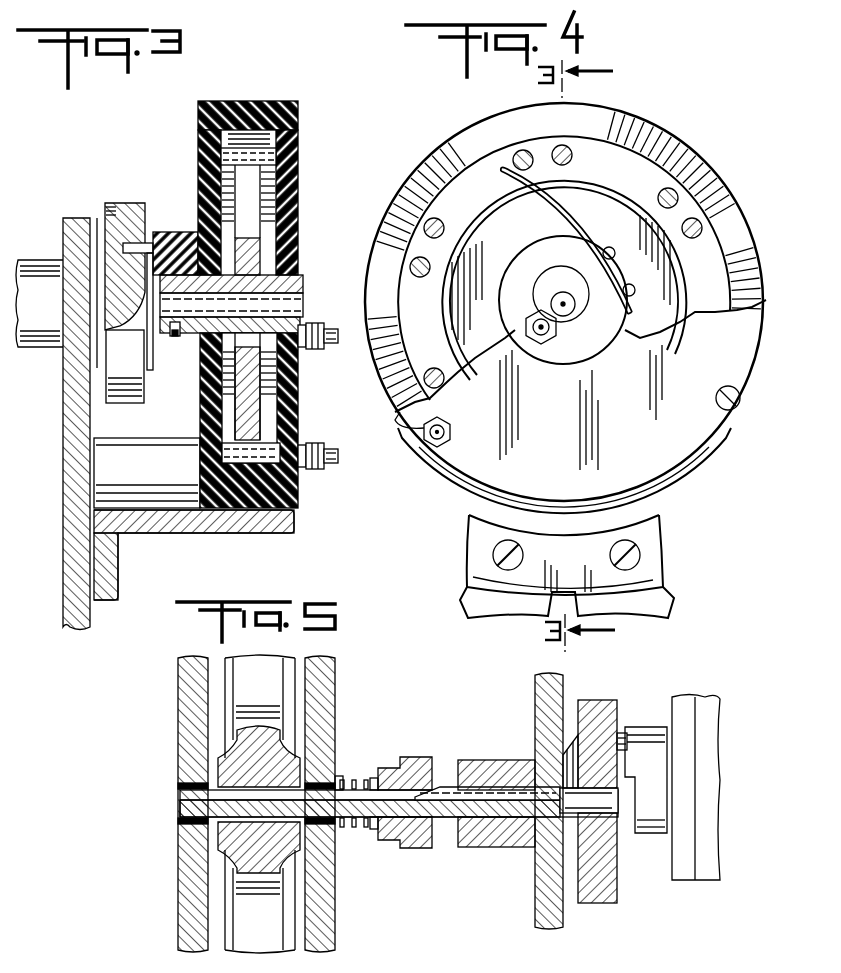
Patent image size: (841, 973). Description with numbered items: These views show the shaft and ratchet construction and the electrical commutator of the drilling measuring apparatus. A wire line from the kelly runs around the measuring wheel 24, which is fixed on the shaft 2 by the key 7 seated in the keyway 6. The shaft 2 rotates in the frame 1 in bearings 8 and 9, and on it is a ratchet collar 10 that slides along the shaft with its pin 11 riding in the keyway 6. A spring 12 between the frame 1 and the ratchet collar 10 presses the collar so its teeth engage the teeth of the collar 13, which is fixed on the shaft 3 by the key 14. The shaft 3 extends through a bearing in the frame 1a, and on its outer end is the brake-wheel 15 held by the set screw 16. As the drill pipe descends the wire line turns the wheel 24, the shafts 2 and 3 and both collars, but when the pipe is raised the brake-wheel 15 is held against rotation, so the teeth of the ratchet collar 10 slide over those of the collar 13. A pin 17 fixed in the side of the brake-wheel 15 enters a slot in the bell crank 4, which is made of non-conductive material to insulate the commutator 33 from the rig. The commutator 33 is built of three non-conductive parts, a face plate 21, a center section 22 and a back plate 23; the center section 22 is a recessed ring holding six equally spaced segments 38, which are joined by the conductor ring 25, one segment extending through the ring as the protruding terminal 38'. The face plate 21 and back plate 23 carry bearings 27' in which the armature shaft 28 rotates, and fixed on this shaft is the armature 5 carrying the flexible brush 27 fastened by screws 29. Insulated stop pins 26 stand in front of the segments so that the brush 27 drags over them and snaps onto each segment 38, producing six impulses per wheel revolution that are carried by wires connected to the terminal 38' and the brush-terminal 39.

In FIG. 5, the frame 1 is at (335, 677).
In FIG. 3, the frame 1a is at (66, 218).
In FIG. 5, the frame 1a is at (563, 680).
In FIG. 5, the shaft 2 is at (180, 797).
In FIG. 5, the shaft 3 is at (608, 805).
In FIG. 3, the bell crank 4 is at (188, 230).
In FIG. 5, the bell crank 4 is at (655, 835).
In FIG. 4, the armature 5 is at (500, 318).
In FIG. 5, the keyway 6 is at (342, 827).
In FIG. 5, the key 7 is at (300, 838).
In FIG. 5, the bearing 8 is at (178, 783).
In FIG. 5, the bearing 9 is at (338, 776).
In FIG. 5, the ratchet collar 10 is at (390, 768).
In FIG. 5, the pin 11 is at (406, 848).
In FIG. 5, the spring 12 is at (372, 829).
In FIG. 5, the collar 13 is at (442, 765).
In FIG. 5, the key 14 is at (470, 787).
In FIG. 3, the brake-wheel 15 is at (138, 405).
In FIG. 5, the brake-wheel 15 is at (604, 700).
In FIG. 3, the set screw 16 is at (180, 336).
In FIG. 5, the set screw 16 is at (570, 750).
In FIG. 3, the pin 17 is at (148, 243).
In FIG. 5, the pin 17 is at (624, 733).
In FIG. 3, the face plate 21 is at (298, 112).
In FIG. 3, the center section 22 is at (257, 103).
In FIG. 3, the back plate 23 is at (198, 135).
In FIG. 5, the back plate 23 is at (680, 884).
In FIG. 5, the measuring wheel 24 is at (298, 660).
In FIG. 3, the conductor ring 25 is at (298, 410).
In FIG. 4, the stop pins 26 is at (519, 153).
In FIG. 4, the flexible commutator brush 27 is at (564, 273).
In FIG. 3, the bearings 27' is at (247, 333).
In FIG. 3, the armature shaft 28 is at (303, 305).
In FIG. 4, the screws 29 is at (616, 256).
In FIG. 5, the commutator 33 is at (700, 697).
In FIG. 3, the segments 38 is at (279, 152).
In FIG. 4, the segments 38 is at (600, 266).
In FIG. 3, the protruding terminal 38' is at (296, 443).
In FIG. 4, the protruding terminal 38' is at (401, 429).
In FIG. 3, the brush-terminal 39 is at (315, 344).
In FIG. 4, the brush-terminal 39 is at (540, 344).